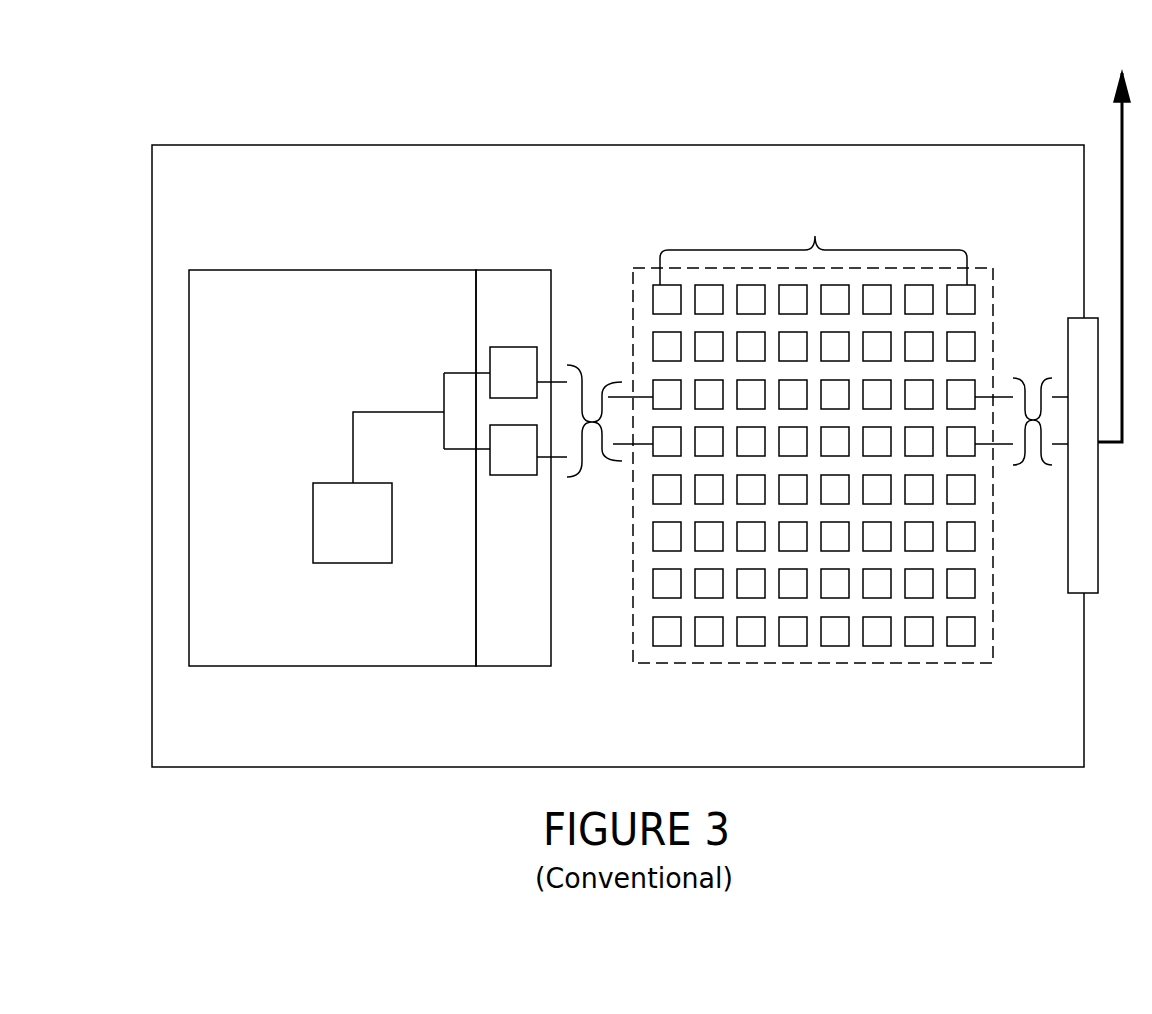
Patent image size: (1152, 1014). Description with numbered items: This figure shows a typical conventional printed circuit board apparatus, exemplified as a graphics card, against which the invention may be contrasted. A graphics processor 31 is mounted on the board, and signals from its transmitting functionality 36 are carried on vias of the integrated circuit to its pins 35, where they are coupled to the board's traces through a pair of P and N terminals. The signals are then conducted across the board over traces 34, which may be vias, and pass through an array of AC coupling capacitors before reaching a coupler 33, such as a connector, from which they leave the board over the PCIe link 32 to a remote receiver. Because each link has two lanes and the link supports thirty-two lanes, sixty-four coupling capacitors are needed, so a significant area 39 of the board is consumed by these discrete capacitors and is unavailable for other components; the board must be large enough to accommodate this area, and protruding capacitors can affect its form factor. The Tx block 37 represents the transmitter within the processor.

The graphics processor 31 is at (216, 334).
The PCIe link 32 is at (1122, 122).
The coupler 33 is at (1078, 593).
The traces 34 is at (587, 421).
The pins 35 is at (503, 647).
The transmitting functionality (Tx) 36 is at (384, 412).
The transmitter (Tx) 37 is at (364, 549).
The area 39 is at (653, 663).